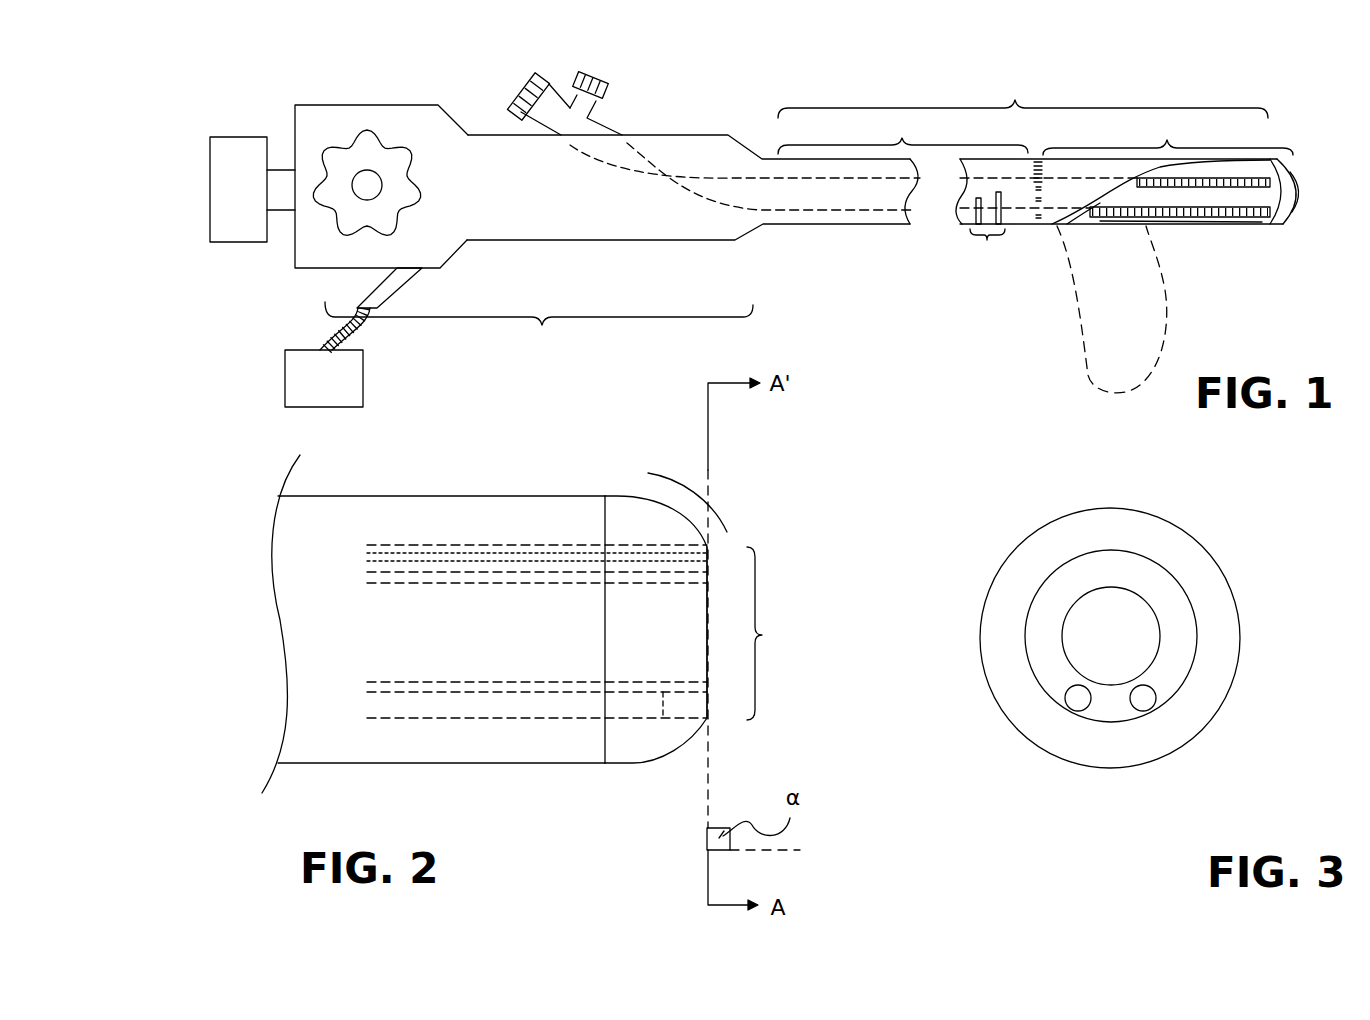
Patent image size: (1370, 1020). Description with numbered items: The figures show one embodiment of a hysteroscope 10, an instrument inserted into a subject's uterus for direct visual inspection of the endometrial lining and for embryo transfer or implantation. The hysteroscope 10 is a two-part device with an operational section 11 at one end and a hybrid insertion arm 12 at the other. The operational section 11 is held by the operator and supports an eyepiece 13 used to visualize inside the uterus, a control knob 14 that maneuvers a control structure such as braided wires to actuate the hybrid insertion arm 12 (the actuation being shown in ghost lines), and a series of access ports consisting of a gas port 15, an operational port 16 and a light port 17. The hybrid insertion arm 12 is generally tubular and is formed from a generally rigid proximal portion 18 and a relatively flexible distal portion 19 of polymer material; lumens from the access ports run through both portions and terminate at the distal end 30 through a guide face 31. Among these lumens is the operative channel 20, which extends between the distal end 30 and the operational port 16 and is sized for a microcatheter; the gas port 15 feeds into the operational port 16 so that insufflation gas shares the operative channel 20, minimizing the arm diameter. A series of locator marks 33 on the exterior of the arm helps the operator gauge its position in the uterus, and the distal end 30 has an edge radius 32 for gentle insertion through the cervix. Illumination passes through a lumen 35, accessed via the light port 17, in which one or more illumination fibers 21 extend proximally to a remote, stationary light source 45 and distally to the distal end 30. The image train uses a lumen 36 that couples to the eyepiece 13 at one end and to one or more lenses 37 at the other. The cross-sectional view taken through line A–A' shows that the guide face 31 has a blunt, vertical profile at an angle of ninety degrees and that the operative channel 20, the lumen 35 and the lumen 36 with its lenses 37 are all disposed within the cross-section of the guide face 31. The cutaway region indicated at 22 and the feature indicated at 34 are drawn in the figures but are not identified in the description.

In FIG. 1, the hysteroscope 10 is at (797, 88).
In FIG. 1, the operational section 11 is at (539, 333).
In FIG. 1, the hybrid insertion arm 12 is at (842, 234).
In FIG. 1, the eyepiece 13 is at (249, 227).
In FIG. 1, the control knob 14 is at (422, 189).
In FIG. 1, the gas port 15 is at (614, 84).
In FIG. 1, the operational port 16 is at (525, 76).
In FIG. 1, the light port 17 is at (400, 292).
In FIG. 1, the proximal portion 18 is at (903, 133).
In FIG. 1, the distal portion 19 is at (1168, 135).
In FIG. 1, the operative channel 20 is at (1115, 193).
In FIG. 2, the operative channel 20 is at (480, 585).
In FIG. 1, the illumination fibers 21 is at (360, 332).
In FIG. 2, the illumination fibers 21 is at (450, 548).
In FIG. 1, the cutaway window 22 is at (1250, 162).
In FIG. 1, the distal end 30 is at (1290, 226).
In FIG. 2, the distal end 30 is at (656, 537).
In FIG. 3, the distal end 30 is at (1014, 536).
In FIG. 1, the guide face 31 is at (1304, 190).
In FIG. 2, the guide face 31 is at (770, 633).
In FIG. 3, the guide face 31 is at (1068, 612).
In FIG. 2, the edge radius 32 is at (702, 496).
In FIG. 3, the edge radius 32 is at (1121, 757).
In FIG. 1, the locator marks 33 is at (1006, 218).
In FIG. 2, the inner wall 34 is at (722, 618).
In FIG. 3, the inner wall 34 is at (1160, 637).
In FIG. 2, the lumen 35 is at (555, 545).
In FIG. 3, the lumen 35 is at (1152, 703).
In FIG. 2, the lumen 36 is at (528, 720).
In FIG. 3, the lumen 36 is at (1068, 708).
In FIG. 2, the lenses 37 is at (705, 718).
In FIG. 1, the light source 45 is at (335, 397).